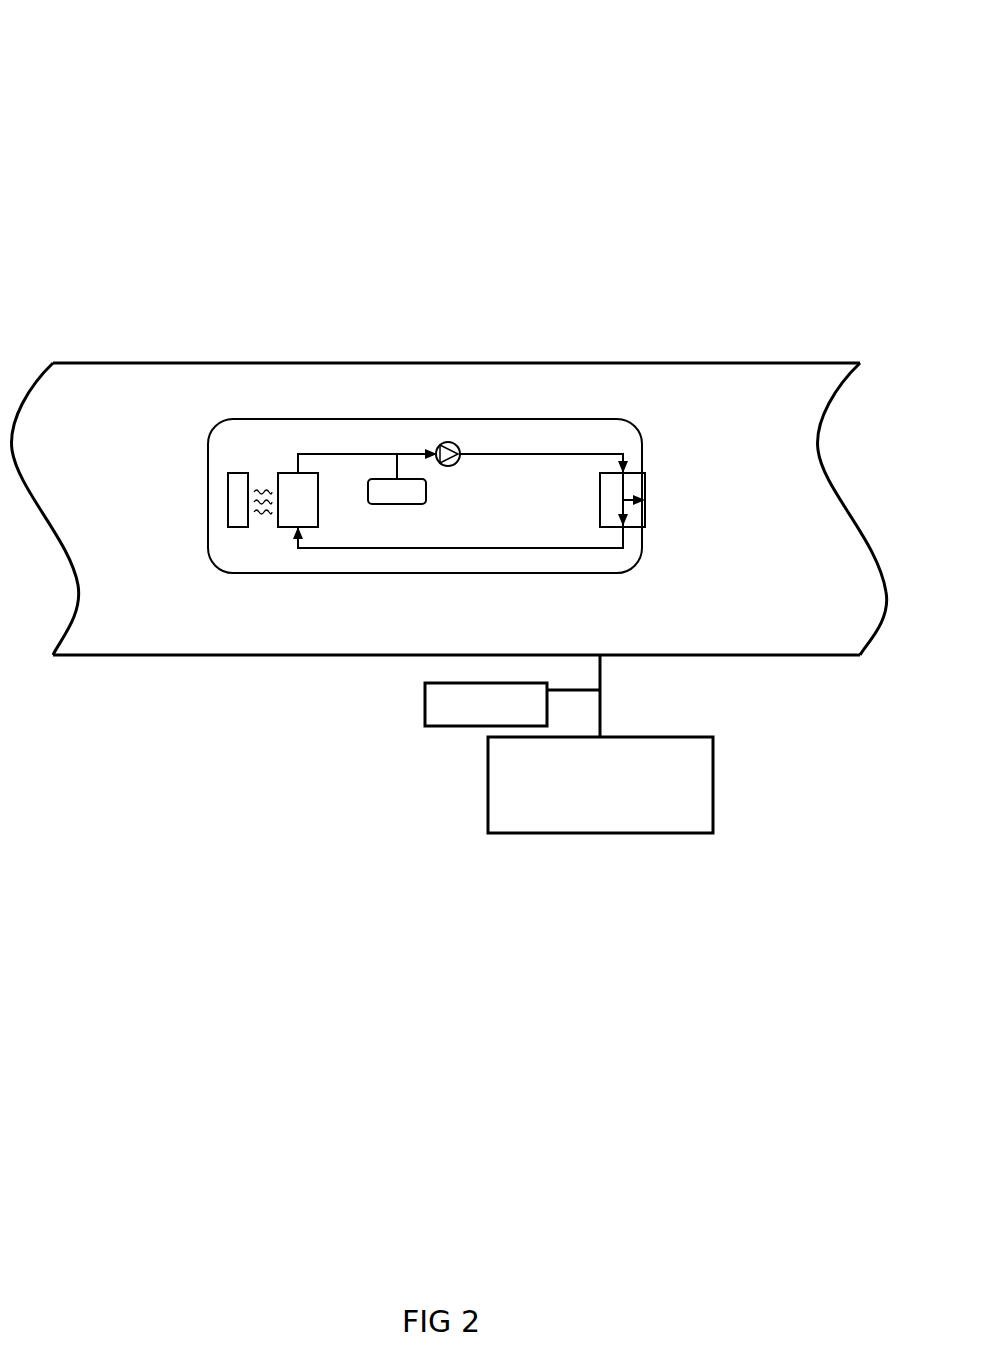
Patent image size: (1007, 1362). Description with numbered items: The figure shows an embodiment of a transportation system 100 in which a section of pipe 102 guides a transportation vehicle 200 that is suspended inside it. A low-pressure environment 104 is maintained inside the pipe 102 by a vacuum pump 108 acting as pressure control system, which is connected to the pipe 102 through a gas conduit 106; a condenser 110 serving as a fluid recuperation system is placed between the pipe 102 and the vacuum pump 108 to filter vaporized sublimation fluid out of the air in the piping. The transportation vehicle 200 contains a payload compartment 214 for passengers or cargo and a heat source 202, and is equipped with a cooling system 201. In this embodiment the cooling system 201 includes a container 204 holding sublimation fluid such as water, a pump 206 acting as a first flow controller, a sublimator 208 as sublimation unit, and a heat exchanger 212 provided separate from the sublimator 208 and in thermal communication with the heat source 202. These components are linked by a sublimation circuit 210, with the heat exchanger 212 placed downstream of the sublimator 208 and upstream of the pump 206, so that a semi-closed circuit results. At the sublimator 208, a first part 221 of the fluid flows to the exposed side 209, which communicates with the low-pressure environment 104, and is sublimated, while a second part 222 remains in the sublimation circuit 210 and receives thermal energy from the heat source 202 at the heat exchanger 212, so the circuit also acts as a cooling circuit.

The transportation system 100 is at (73, 42).
The pipe 102 is at (449, 474).
The low-pressure environment 104 is at (188, 628).
The gas conduit 106 is at (624, 696).
The vacuum pump 108 is at (650, 785).
The condenser 110 is at (466, 736).
The transportation vehicle 200 is at (425, 589).
The cooling system 201 is at (513, 519).
The heat source 202 is at (285, 406).
The container 204 is at (439, 394).
The pump 206 is at (508, 375).
The sublimator 208 is at (656, 405).
The exposed side 209 is at (691, 405).
The sublimation circuit 210 is at (470, 404).
The heat exchanger 212 is at (335, 406).
The payload compartment 214 is at (271, 560).
The first part of the sublimation fluid 221 is at (752, 610).
The second part of the sublimation fluid 222 is at (721, 623).